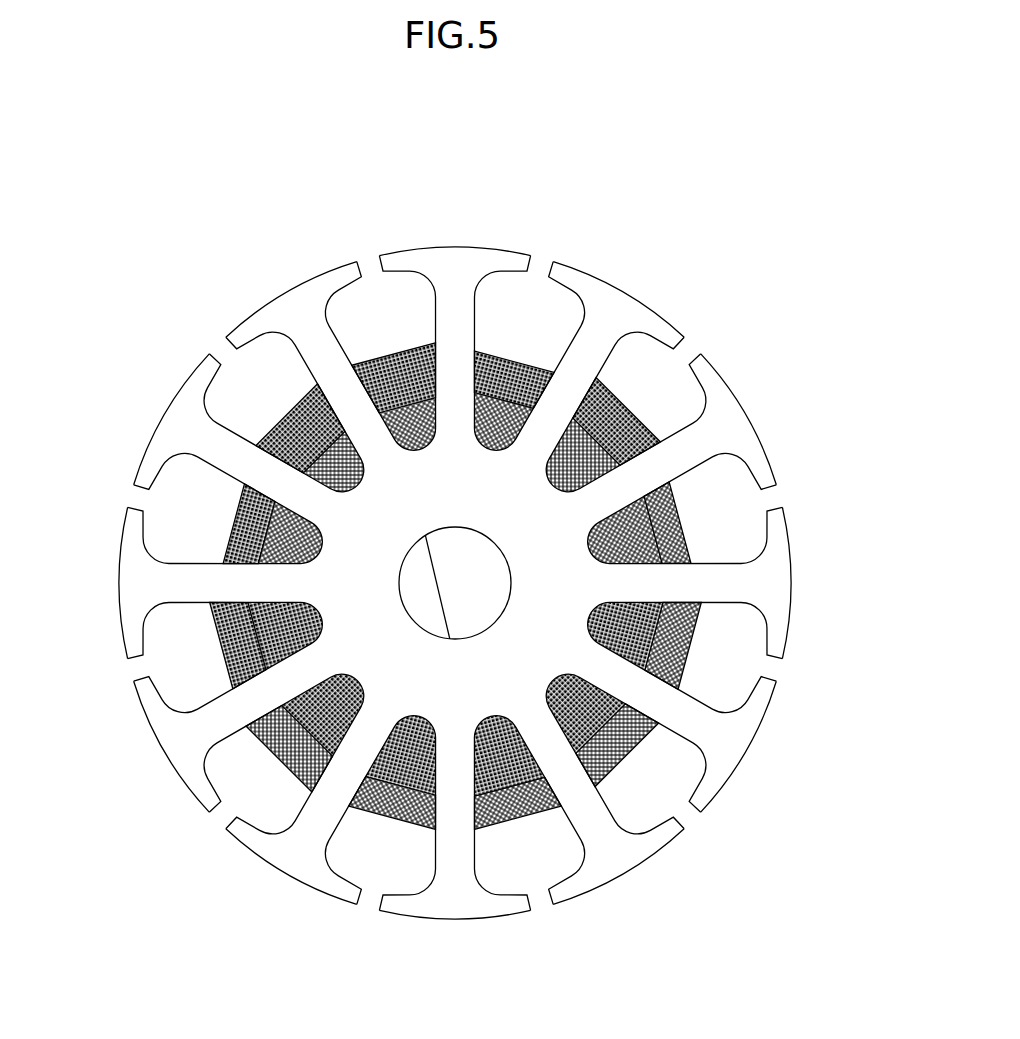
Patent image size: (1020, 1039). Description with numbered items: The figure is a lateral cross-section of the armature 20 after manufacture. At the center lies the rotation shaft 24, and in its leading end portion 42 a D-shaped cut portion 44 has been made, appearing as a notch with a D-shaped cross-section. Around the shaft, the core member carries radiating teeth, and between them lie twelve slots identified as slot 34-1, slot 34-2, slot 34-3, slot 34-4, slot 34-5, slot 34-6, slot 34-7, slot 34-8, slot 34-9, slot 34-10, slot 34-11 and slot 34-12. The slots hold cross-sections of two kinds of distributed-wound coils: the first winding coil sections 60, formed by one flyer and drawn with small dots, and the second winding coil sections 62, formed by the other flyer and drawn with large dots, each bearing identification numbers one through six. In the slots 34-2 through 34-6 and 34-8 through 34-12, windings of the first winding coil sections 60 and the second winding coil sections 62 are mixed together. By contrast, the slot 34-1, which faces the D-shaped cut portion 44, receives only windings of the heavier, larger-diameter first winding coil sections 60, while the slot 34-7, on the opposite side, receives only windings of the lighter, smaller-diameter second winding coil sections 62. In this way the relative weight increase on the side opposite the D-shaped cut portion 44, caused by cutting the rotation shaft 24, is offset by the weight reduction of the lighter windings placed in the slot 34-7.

The armature 20 is at (460, 183).
The slot 34-1 is at (160, 656).
The slot 34-2 is at (152, 506).
The slot 34-3 is at (233, 367).
The slot 34-4 is at (378, 284).
The slot 34-5 is at (527, 290).
The slot 34-6 is at (673, 362).
The slot 34-7 is at (748, 498).
The slot 34-8 is at (737, 664).
The slot 34-9 is at (680, 797).
The slot 34-10 is at (537, 880).
The slot 34-11 is at (383, 904).
The slot 34-12 is at (236, 796).
The first winding coil section 60 is at (413, 340).
The second winding coil section 62 is at (382, 400).
The rotation shaft 24 is at (466, 549).
The leading end portion 42 is at (465, 528).
The D-shaped cut portion 44 is at (413, 602).